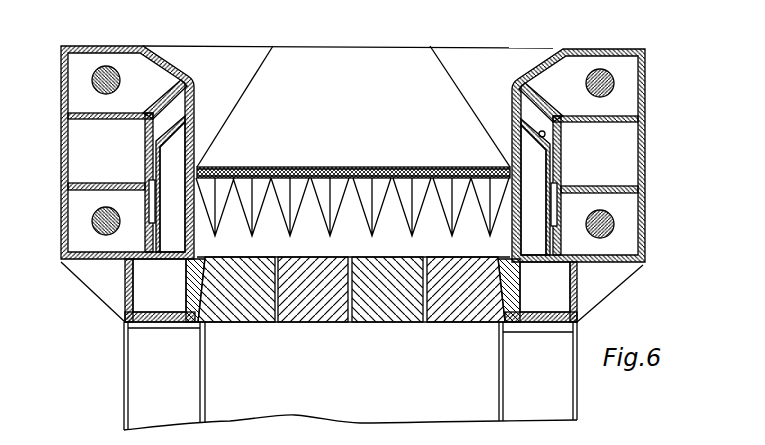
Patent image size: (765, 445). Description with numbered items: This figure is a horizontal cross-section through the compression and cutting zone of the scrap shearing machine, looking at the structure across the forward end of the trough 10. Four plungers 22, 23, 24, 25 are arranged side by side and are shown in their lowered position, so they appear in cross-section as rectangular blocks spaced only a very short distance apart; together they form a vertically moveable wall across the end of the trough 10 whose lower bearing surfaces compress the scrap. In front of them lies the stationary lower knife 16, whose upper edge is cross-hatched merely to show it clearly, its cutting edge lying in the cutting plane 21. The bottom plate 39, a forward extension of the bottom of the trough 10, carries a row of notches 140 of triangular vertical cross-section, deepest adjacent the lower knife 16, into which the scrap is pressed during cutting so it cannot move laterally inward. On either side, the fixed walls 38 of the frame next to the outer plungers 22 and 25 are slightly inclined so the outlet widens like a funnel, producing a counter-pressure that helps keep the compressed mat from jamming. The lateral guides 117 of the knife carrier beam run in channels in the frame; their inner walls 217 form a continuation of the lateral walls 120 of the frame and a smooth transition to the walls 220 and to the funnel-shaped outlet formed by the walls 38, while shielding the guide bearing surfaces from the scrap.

The trough 10 is at (477, 417).
The stationary lower knife 16 is at (366, 167).
The cutting plane 21 is at (268, 167).
The plunger 22 is at (243, 308).
The plunger 23 is at (317, 308).
The plunger 24 is at (388, 308).
The plunger 25 is at (462, 315).
The fixed wall 38 is at (200, 272).
The bottom plate 39 is at (305, 220).
The lateral guide 117 is at (163, 103).
The lateral wall 120 is at (195, 212).
The notch 140 is at (404, 190).
The inner wall of guide 217 is at (197, 128).
The wall 220 is at (175, 56).